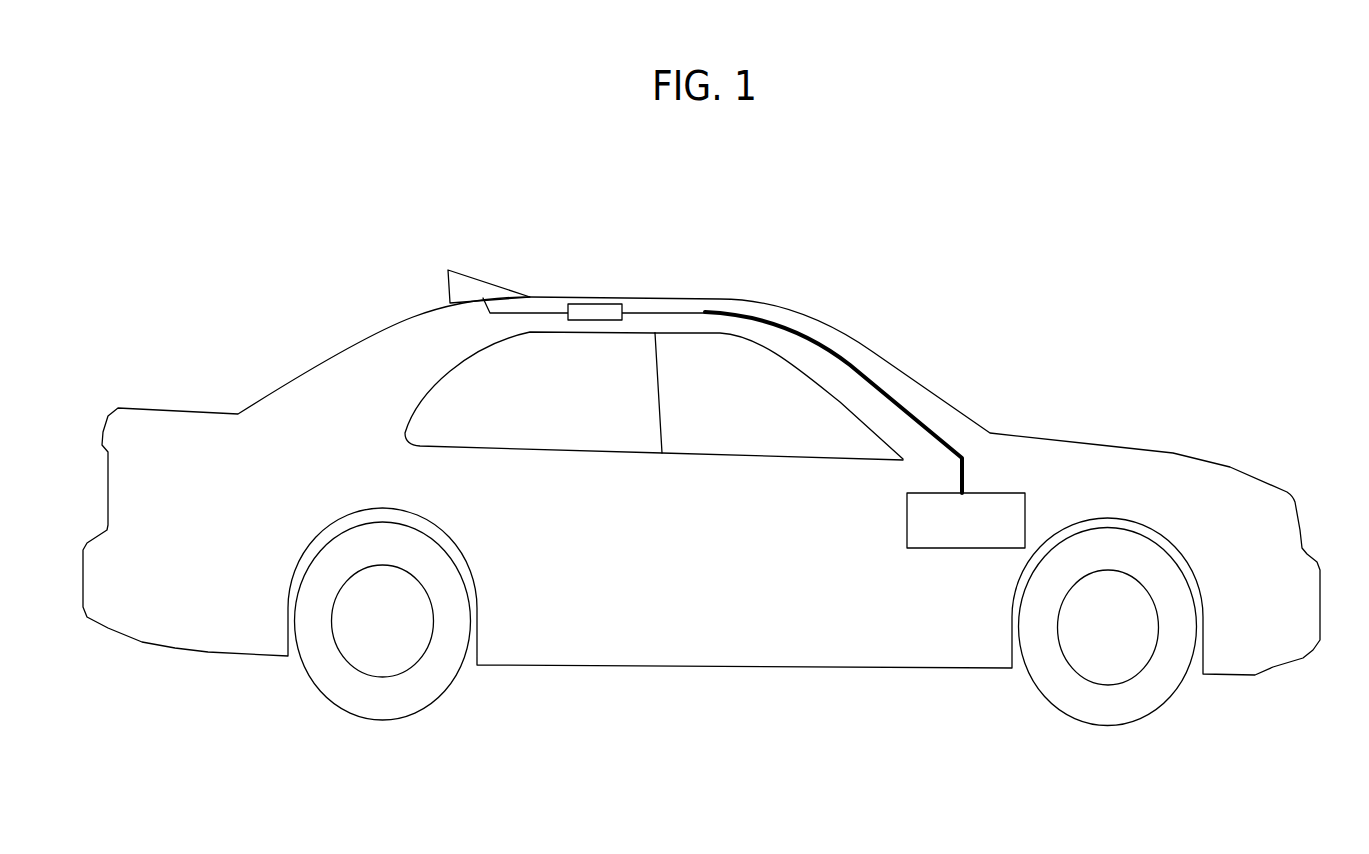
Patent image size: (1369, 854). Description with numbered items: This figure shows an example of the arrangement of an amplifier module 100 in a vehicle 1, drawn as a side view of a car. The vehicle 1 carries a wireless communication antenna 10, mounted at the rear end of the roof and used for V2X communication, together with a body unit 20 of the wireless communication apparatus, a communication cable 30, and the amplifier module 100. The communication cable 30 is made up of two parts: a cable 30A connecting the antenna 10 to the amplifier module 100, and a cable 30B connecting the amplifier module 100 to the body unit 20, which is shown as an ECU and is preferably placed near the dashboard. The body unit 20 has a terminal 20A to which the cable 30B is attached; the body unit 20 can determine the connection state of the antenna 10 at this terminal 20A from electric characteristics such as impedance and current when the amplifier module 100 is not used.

The vehicle 1 is at (701, 474).
The wireless communication antenna 10 is at (457, 295).
The body unit 20 is at (1008, 522).
The terminal 20A is at (1008, 507).
The communication cable 30 is at (618, 268).
The cable 30A is at (545, 307).
The cable 30B is at (705, 310).
The amplifier module 100 is at (597, 308).